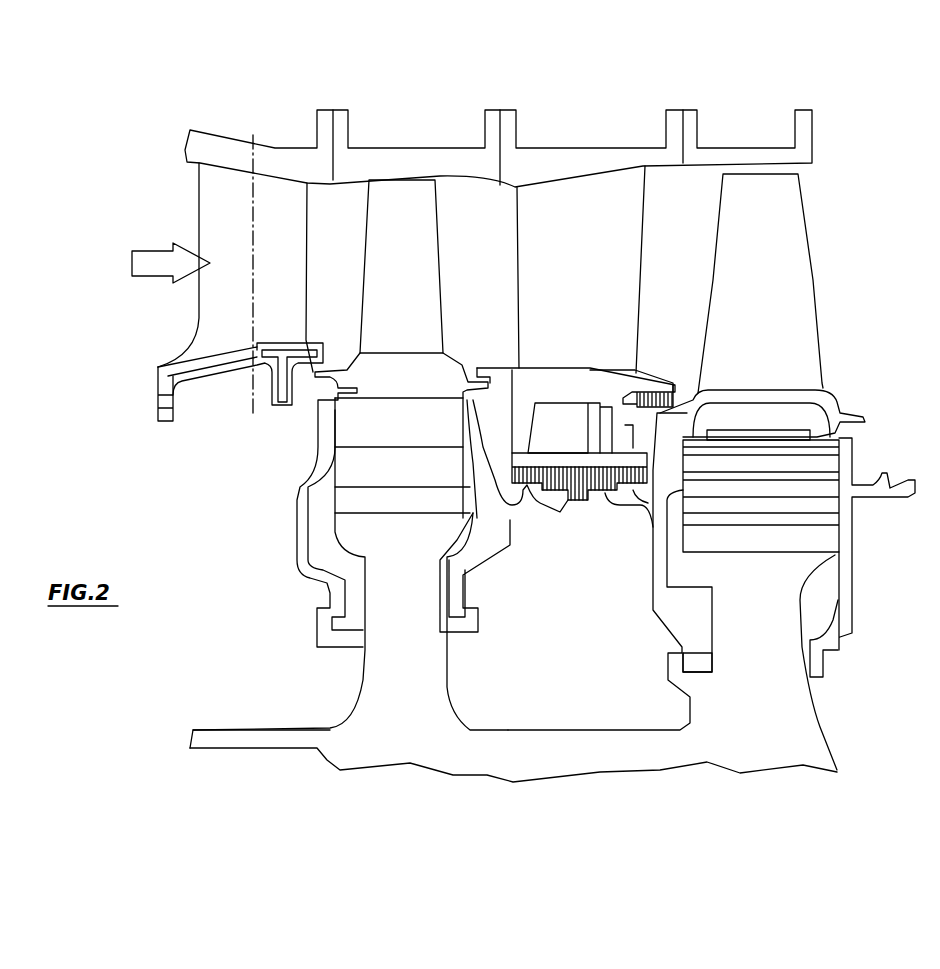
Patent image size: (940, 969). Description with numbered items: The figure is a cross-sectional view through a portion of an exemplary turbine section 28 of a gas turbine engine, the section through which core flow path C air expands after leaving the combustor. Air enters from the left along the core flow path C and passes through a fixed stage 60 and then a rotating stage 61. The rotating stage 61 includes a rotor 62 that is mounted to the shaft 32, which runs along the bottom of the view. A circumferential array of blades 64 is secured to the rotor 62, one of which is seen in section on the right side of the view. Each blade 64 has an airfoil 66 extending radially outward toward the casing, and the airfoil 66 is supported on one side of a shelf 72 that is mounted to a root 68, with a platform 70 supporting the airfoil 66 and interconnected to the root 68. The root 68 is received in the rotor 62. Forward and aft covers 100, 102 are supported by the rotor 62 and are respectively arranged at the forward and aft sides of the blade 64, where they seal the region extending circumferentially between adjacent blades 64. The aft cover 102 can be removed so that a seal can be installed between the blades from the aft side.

The turbine section 28 is at (568, 62).
The shaft 32 is at (265, 740).
The fixed stage 60 is at (224, 128).
The rotating stage 61 is at (416, 132).
The rotor 62 is at (725, 638).
The blade 64 is at (791, 464).
The airfoil 66 is at (802, 272).
The root 68 is at (753, 493).
The platform 70 is at (775, 393).
The shelf 72 is at (745, 433).
The forward cover 100 is at (657, 543).
The aft cover 102 is at (830, 572).
The core flow path C is at (155, 277).